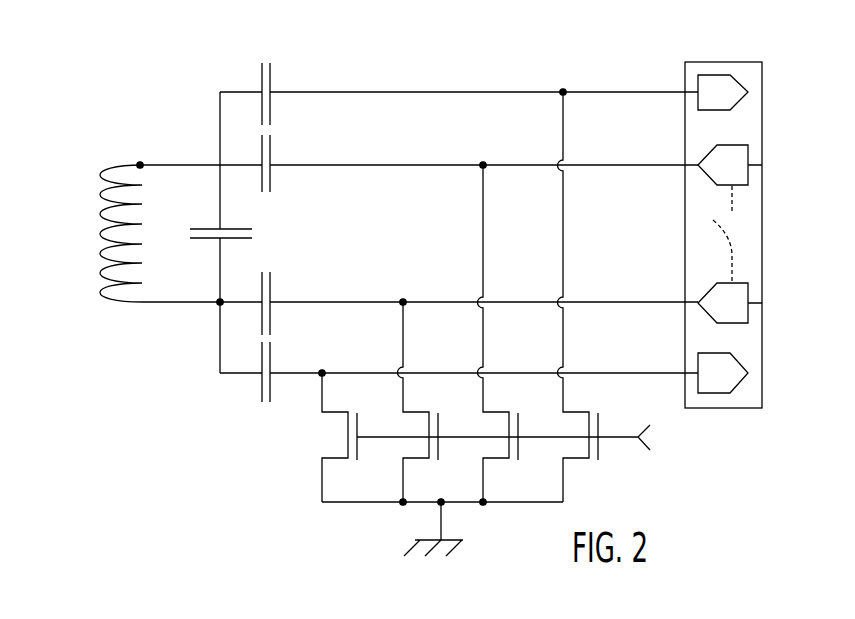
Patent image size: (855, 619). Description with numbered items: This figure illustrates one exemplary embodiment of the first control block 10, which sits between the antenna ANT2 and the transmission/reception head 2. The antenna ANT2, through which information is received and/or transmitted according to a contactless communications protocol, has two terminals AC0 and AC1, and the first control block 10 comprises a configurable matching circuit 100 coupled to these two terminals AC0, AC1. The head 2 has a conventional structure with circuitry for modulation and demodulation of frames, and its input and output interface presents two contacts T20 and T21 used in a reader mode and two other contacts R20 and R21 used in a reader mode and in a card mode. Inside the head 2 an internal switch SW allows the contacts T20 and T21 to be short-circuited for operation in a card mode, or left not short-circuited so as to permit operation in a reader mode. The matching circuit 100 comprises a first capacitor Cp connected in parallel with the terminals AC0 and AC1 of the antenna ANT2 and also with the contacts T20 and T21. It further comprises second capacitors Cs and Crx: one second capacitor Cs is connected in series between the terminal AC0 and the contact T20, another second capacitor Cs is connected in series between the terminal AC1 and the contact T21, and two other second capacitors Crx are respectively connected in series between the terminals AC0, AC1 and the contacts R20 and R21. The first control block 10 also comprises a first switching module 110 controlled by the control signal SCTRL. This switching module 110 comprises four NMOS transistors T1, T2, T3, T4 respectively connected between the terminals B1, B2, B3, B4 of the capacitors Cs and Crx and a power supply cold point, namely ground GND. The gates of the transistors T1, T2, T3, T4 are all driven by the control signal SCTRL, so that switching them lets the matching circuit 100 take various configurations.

The configurable matching circuit 100 is at (418, 74).
The transmission/reception head 2 is at (712, 208).
The first control block 10 is at (269, 426).
The first switching module 110 is at (494, 339).
The antenna ANT2 is at (100, 236).
The terminal of the antenna AC0 is at (218, 165).
The terminal of the antenna AC1 is at (219, 303).
The first capacitor Cp is at (205, 228).
The second capacitor Crx is at (272, 80).
The second capacitor Cs is at (272, 149).
The terminal of the capacitors B1 is at (322, 370).
The terminal of the capacitors B2 is at (403, 299).
The terminal of the capacitors B3 is at (483, 162).
The terminal of the capacitors B4 is at (563, 89).
The NMOS transistor T1 is at (323, 426).
The NMOS transistor T2 is at (403, 426).
The NMOS transistor T3 is at (483, 426).
The NMOS transistor T4 is at (563, 426).
The contact R20 is at (748, 92).
The contact T20 is at (762, 165).
The contact T21 is at (762, 303).
The contact R21 is at (748, 373).
The internal switch SW is at (717, 238).
The control signal SCTRL is at (529, 436).
The ground GND is at (433, 544).